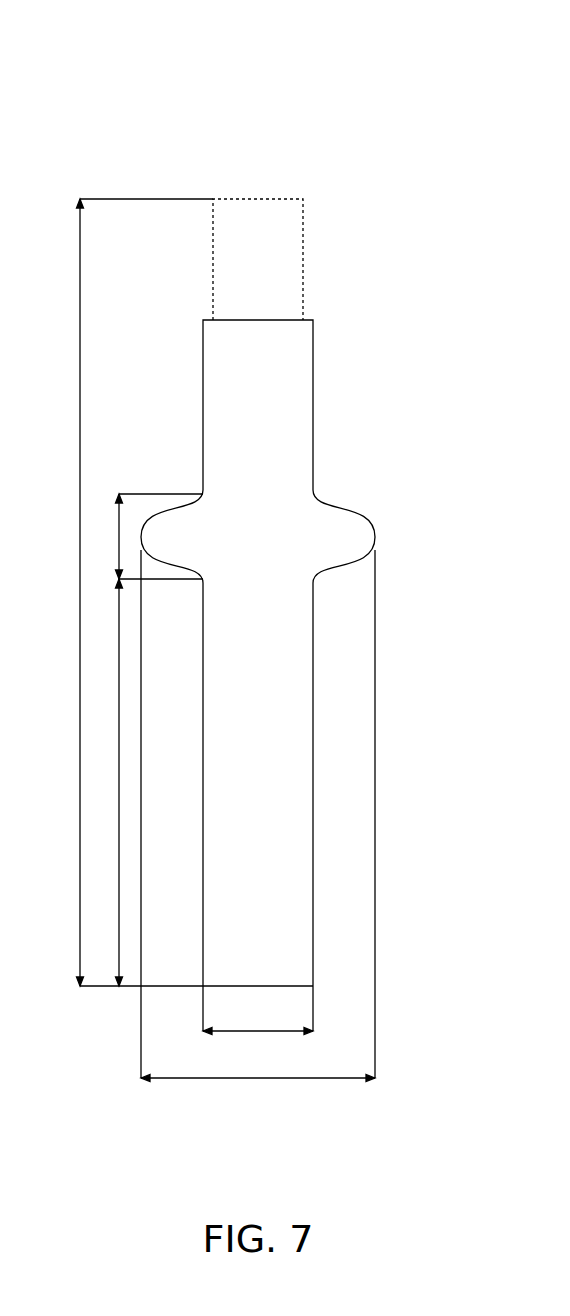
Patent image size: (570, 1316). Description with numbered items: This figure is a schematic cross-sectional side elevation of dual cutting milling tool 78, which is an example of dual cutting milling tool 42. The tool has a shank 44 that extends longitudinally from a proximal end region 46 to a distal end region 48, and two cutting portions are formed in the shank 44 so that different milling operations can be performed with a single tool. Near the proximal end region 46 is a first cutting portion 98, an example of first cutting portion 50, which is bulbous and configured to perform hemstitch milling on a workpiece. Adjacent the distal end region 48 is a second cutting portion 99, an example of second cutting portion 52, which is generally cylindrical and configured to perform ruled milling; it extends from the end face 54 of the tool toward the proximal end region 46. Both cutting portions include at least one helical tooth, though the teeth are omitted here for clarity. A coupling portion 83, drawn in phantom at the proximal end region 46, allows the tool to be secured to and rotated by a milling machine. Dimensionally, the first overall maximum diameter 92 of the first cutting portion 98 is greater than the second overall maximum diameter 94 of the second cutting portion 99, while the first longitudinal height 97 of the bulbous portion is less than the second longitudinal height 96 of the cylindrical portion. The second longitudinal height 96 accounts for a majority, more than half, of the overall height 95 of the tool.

The dual cutting milling tool 42 is at (350, 55).
The dual cutting milling tool 78 is at (323, 122).
The proximal end region 46 is at (183, 245).
The coupling portion 83 is at (278, 265).
The shank 44 is at (303, 415).
The first cutting portion 50 is at (310, 521).
The first cutting portion 98 is at (398, 535).
The second cutting portion 52 is at (161, 741).
The second cutting portion 99 is at (168, 728).
The distal end region 48 is at (337, 991).
The end face 54 is at (248, 987).
The overall height 95 is at (78, 585).
The first longitudinal height 97 is at (118, 538).
The second longitudinal height 96 is at (118, 768).
The second overall maximum diameter 94 is at (260, 1033).
The first overall maximum diameter 92 is at (260, 1080).